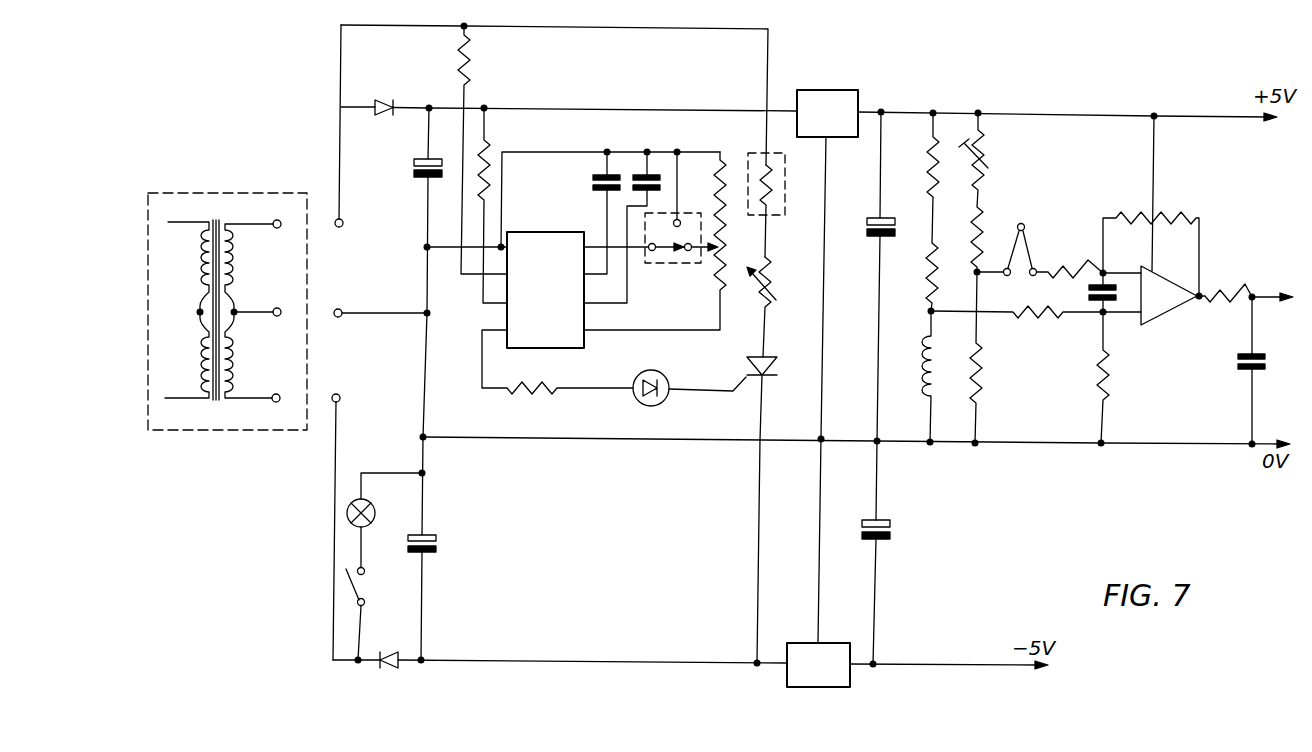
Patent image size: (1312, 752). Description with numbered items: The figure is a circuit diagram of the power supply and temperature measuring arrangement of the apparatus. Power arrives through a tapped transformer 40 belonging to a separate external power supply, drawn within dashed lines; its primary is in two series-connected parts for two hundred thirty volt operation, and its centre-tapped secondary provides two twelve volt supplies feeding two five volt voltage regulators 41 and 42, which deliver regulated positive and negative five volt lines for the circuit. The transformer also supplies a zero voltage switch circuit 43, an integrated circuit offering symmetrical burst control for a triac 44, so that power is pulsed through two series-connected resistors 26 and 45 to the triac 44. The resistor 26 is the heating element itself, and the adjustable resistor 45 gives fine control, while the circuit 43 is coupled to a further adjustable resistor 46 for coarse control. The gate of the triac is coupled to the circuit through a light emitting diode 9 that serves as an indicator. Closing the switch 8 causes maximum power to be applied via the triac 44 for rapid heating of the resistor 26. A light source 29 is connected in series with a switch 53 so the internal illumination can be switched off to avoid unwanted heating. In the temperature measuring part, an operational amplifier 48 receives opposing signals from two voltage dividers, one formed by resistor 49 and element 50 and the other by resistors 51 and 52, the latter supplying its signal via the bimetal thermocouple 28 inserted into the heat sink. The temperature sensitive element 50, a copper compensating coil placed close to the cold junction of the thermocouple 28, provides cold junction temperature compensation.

The tapped transformer 40 is at (245, 192).
The voltage regulator 41 is at (817, 103).
The voltage regulator 42 is at (800, 652).
The zero voltage switch circuit 43 is at (580, 349).
The switch 8 is at (663, 257).
The adjustable resistor 46 is at (717, 277).
The resistor 26 is at (773, 215).
The adjustable resistor 45 is at (770, 283).
The triac 44 is at (775, 362).
The light emitting diode 9 is at (654, 371).
The light source 29 is at (377, 512).
The switch 53 is at (366, 584).
The voltage divider resistor 49 is at (930, 276).
The temperature sensitive element 50 is at (923, 372).
The voltage divider resistor 51 is at (975, 242).
The voltage divider resistor 52 is at (982, 363).
The bimetal thermocouple 28 is at (1028, 242).
The operational amplifier 48 is at (1168, 313).